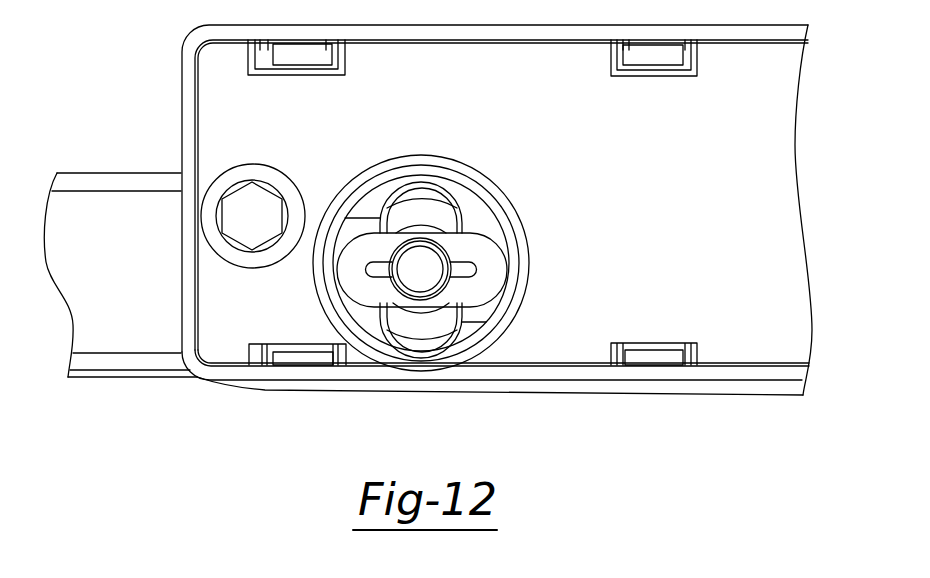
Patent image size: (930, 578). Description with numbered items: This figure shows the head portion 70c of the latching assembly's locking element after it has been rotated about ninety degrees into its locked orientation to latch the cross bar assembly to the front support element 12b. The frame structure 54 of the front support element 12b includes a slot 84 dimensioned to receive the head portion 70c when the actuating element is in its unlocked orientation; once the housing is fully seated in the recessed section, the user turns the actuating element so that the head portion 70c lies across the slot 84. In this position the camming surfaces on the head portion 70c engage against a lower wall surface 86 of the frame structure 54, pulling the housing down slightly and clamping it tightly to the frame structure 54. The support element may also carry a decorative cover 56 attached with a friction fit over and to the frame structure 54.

The front support element 12b is at (288, 389).
The frame structure 54 is at (577, 342).
The decorative cover 56 is at (388, 386).
The head portion 70c is at (488, 265).
The slot 84 is at (388, 215).
The lower wall surface 86 is at (475, 222).